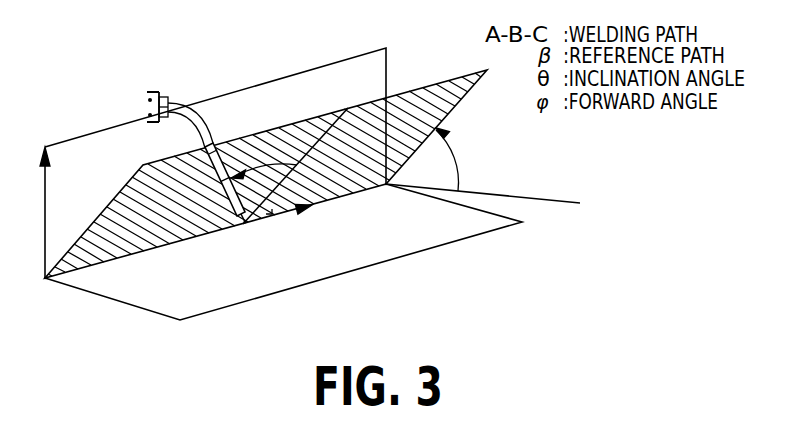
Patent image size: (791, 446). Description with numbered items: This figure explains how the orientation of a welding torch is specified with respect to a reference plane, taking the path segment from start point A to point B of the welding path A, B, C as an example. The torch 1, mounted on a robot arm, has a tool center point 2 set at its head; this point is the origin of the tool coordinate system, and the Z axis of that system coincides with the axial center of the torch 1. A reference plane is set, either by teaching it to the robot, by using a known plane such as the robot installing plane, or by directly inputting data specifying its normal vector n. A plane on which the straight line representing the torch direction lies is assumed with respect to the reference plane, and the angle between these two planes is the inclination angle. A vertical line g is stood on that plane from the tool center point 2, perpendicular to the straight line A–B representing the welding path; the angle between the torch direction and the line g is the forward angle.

The torch 1 is at (226, 141).
The tool center point 2 is at (245, 224).
The vertical line g is at (333, 124).
The start point A is at (34, 296).
The welding path point B is at (389, 198).
The welding path point C is at (493, 200).
The normal vector n is at (62, 212).